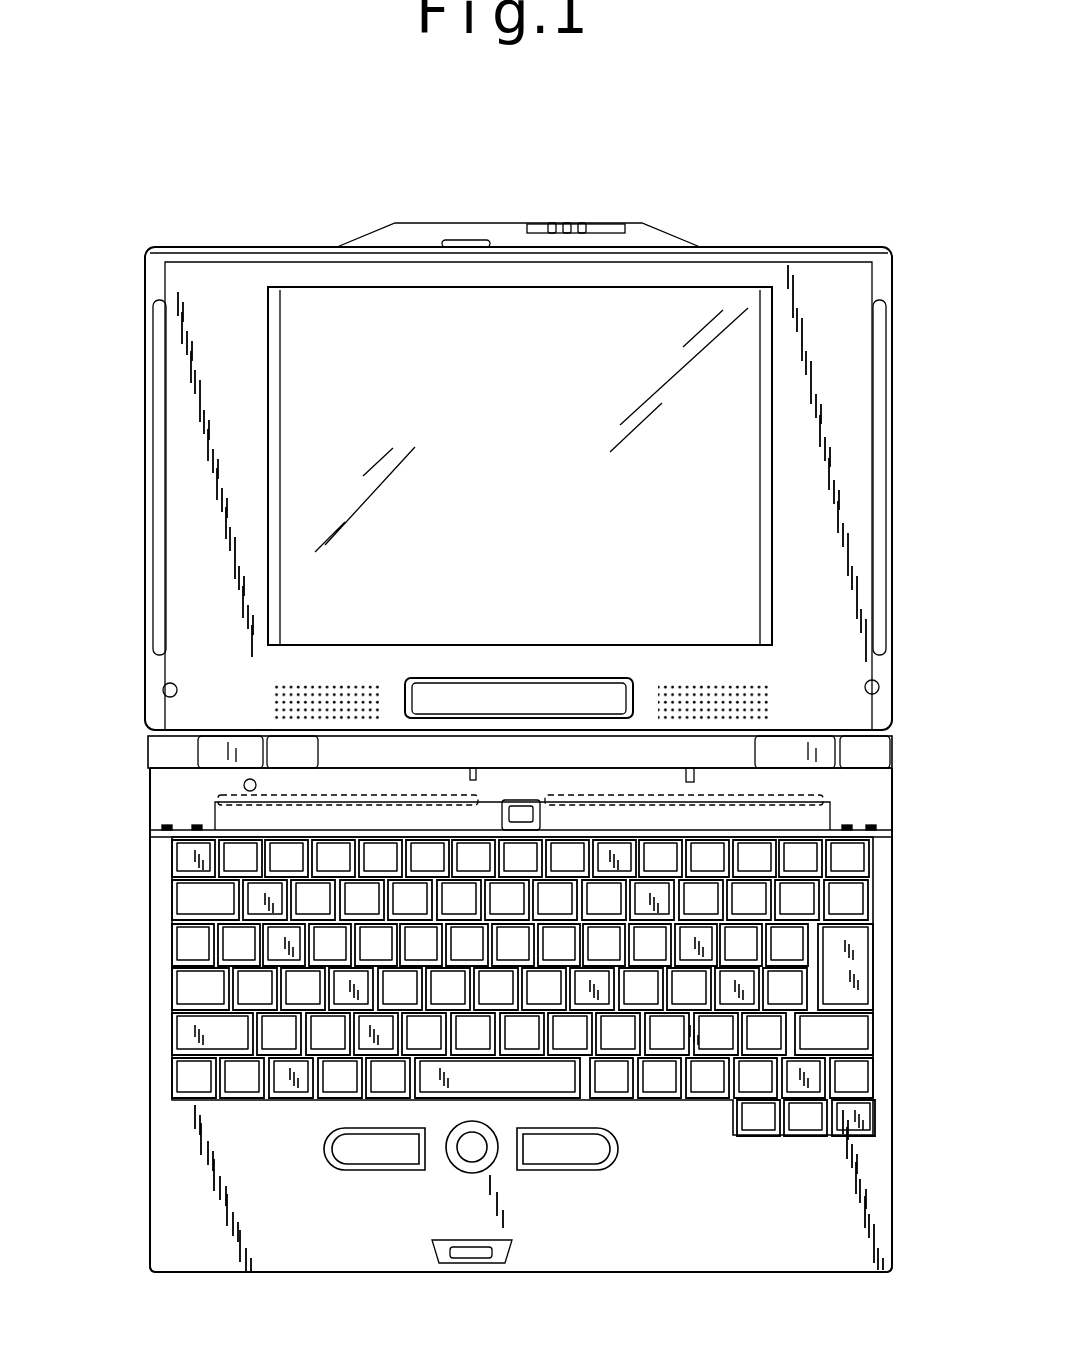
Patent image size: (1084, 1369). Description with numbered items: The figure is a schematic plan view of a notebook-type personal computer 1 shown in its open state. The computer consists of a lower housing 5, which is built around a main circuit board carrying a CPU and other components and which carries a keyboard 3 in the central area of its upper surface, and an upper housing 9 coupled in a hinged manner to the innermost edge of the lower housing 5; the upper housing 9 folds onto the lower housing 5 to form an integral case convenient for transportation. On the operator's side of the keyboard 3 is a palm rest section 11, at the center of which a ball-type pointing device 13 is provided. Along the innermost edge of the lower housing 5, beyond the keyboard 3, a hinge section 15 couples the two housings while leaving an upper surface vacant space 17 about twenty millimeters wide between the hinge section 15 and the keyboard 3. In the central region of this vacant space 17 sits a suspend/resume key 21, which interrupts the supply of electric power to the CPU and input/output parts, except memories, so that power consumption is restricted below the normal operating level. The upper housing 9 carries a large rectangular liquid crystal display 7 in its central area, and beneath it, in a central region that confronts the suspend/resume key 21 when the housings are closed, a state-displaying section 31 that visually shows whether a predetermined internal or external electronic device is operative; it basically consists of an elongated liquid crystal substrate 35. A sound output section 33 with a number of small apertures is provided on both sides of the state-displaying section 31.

The notebook-type personal computer 1 is at (802, 212).
The keyboard 3 is at (137, 844).
The lower housing 5 is at (222, 1272).
The liquid crystal display 7 is at (330, 310).
The upper housing 9 is at (207, 288).
The palm rest section 11 is at (137, 1110).
The pointing device 13 is at (532, 1207).
The hinge section 15 is at (168, 753).
The upper surface vacant space 17 is at (137, 776).
The suspend/resume key 21 is at (522, 800).
The state-displaying section 31 is at (519, 640).
The sound output section 33 is at (327, 670).
The elongated liquid crystal substrate 35 is at (512, 692).